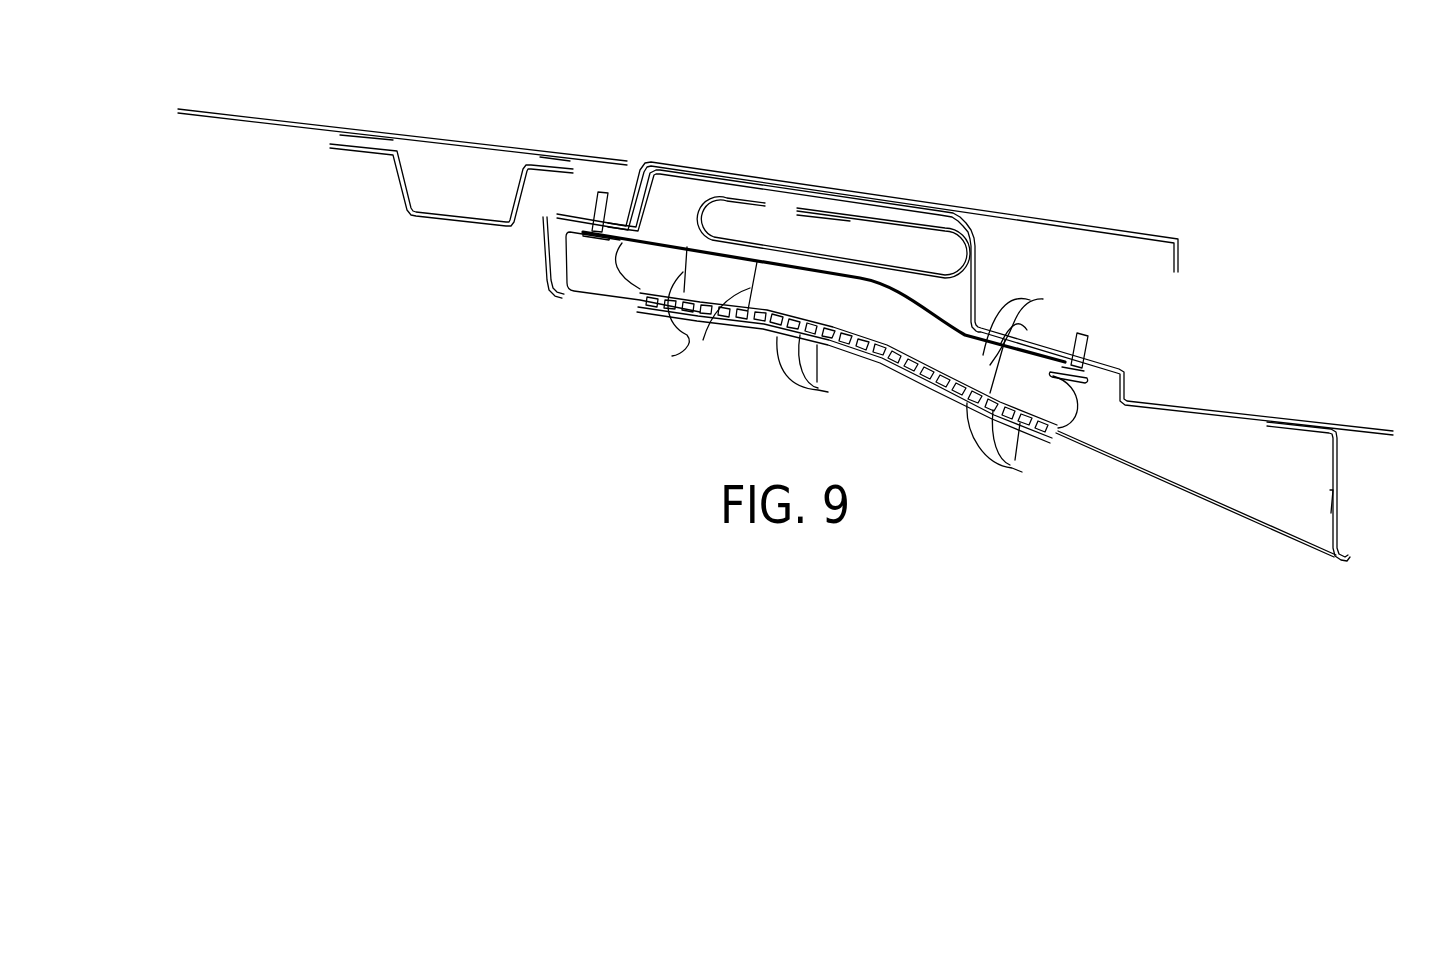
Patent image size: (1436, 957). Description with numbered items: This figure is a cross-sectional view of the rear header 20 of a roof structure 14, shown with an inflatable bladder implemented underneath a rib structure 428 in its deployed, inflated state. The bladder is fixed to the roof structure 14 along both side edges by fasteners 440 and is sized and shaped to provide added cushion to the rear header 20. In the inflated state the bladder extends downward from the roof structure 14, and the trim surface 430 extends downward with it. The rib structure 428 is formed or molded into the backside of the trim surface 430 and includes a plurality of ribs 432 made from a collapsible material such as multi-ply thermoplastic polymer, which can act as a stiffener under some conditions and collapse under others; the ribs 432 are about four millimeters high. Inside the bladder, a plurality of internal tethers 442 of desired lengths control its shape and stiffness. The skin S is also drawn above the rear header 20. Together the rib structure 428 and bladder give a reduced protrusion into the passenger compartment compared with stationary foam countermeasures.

The skin S is at (290, 122).
The roof structure 14 is at (651, 127).
The rear header 20 is at (971, 240).
The fasteners 440 is at (602, 190).
The internal tethers 442 is at (672, 356).
The rib structure 428 is at (725, 336).
The trim surface 430 is at (888, 380).
The ribs 432 is at (853, 391).